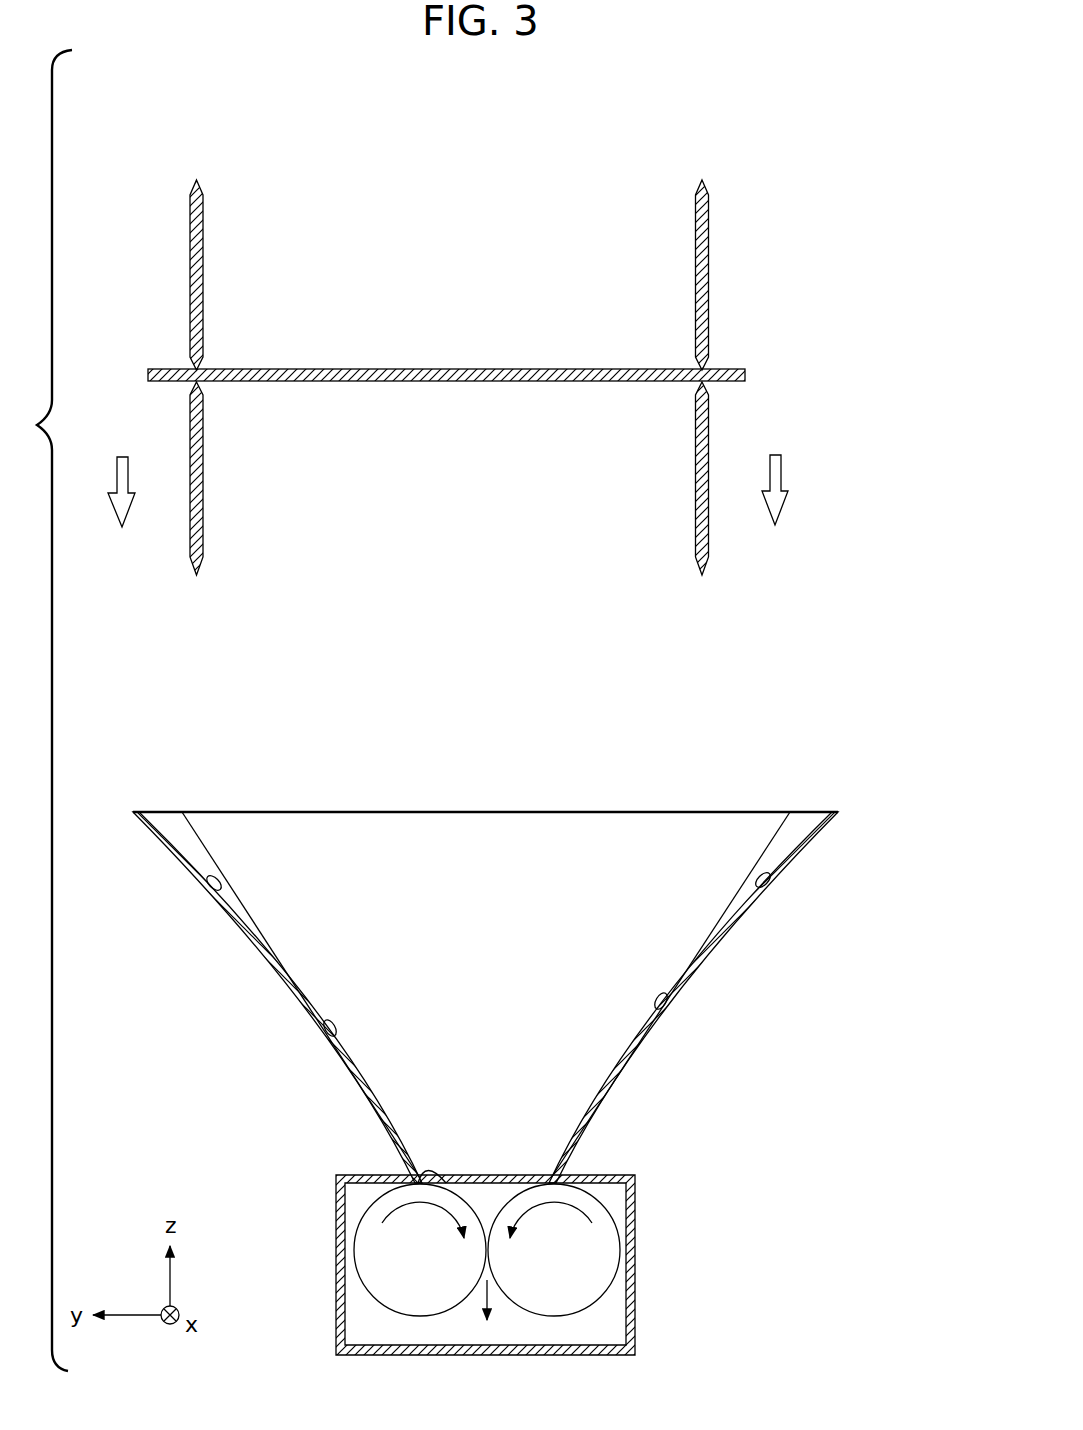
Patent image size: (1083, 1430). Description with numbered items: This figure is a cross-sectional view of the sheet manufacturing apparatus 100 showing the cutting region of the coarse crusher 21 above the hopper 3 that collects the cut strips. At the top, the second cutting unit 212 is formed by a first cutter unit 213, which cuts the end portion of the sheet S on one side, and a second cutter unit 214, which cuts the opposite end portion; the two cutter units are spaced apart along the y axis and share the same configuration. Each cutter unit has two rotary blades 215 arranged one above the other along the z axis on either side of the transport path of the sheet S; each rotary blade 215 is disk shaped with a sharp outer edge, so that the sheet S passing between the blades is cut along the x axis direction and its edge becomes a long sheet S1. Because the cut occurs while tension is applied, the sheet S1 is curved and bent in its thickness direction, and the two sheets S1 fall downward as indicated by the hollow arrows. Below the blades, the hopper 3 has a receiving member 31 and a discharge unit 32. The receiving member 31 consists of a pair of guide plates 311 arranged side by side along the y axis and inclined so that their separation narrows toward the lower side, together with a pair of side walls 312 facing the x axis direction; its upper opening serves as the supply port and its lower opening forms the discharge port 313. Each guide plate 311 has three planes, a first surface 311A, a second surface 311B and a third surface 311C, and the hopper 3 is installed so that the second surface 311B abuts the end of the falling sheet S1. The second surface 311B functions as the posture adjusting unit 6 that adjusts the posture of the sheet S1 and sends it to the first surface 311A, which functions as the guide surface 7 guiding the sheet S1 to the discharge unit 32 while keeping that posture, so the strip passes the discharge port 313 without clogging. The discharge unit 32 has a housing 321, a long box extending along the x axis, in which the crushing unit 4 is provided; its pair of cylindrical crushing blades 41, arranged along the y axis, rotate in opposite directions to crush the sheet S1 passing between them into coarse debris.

The sheet manufacturing apparatus 100 is at (861, 153).
The coarse crusher 21 is at (452, 313).
The second cutting unit 212 is at (452, 335).
The first cutter unit 213 is at (140, 180).
The second cutter unit 214 is at (768, 196).
The rotary blade 215 is at (452, 347).
The sheet S is at (509, 366).
The sheet S1 is at (166, 369).
The hopper 3 is at (493, 1043).
The receiving member 31 is at (493, 957).
The guide plate 311 is at (493, 964).
The first surface 311A is at (326, 1032).
The second surface 311B is at (162, 812).
The third surface 311C is at (210, 888).
The side wall 312 is at (651, 825).
The discharge port 313 is at (410, 1168).
The discharge unit 32 is at (533, 1265).
The housing 321 is at (640, 1313).
The crushing unit 4 is at (483, 1255).
The crushing blade 41 is at (372, 1255).
The posture adjusting unit 6 is at (456, 962).
The guide surface 7 is at (499, 1031).